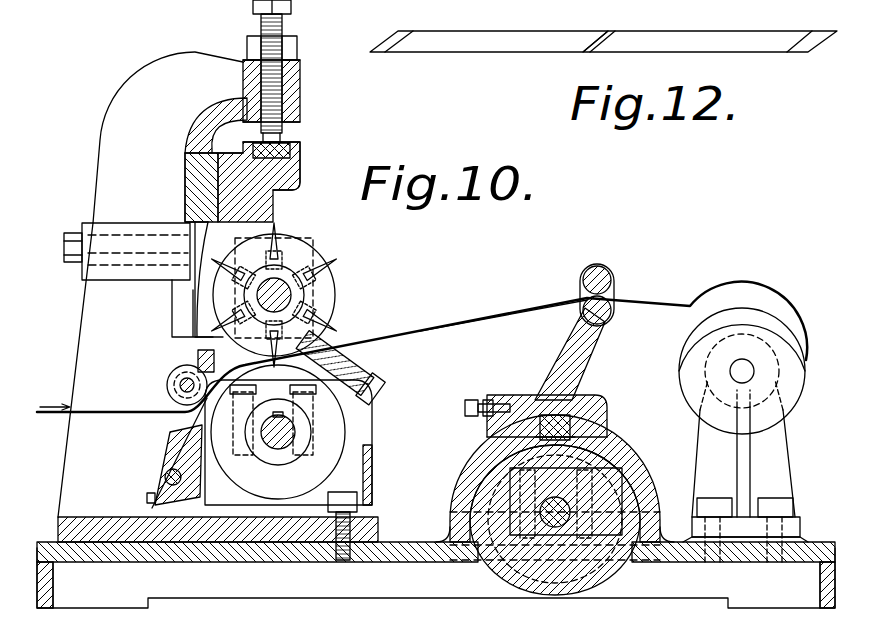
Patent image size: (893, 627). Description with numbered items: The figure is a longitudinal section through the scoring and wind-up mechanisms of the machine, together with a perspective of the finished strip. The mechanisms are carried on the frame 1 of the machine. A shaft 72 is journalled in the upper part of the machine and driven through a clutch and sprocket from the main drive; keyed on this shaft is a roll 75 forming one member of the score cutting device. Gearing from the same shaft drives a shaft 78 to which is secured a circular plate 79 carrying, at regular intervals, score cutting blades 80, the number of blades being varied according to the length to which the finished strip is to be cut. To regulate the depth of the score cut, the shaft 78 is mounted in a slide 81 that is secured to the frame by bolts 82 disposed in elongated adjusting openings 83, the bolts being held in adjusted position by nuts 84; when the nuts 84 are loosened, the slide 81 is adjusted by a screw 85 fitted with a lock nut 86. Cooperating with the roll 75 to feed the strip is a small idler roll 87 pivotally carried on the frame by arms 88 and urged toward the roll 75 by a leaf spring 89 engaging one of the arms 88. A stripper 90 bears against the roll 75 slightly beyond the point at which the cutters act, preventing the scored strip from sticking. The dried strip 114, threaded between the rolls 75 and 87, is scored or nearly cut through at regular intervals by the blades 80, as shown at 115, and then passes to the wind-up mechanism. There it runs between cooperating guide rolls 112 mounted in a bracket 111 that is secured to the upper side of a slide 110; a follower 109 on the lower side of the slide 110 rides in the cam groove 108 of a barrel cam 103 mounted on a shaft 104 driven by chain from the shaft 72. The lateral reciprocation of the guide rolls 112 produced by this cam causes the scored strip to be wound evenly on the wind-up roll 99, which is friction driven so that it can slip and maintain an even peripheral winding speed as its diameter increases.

In FIG. 10, the frame 1 is at (238, 600).
In FIG. 10, the shaft 72 is at (280, 448).
In FIG. 10, the roll 75 is at (333, 462).
In FIG. 10, the shaft 78 is at (292, 296).
In FIG. 10, the circular plate 79 is at (303, 242).
In FIG. 10, the score cutting blades 80 is at (322, 322).
In FIG. 10, the slide 81 is at (300, 176).
In FIG. 10, the bolts 82 is at (123, 240).
In FIG. 10, the elongated adjusting openings 83 is at (135, 266).
In FIG. 10, the nuts 84 is at (66, 232).
In FIG. 10, the screw 85 is at (283, 30).
In FIG. 10, the lock nut 86 is at (297, 48).
In FIG. 10, the idler roll 87 is at (170, 378).
In FIG. 10, the arms 88 is at (165, 422).
In FIG. 10, the leaf spring 89 is at (162, 452).
In FIG. 10, the stripper 90 is at (343, 370).
In FIG. 10, the wind-up roll 99 is at (790, 334).
In FIG. 10, the barrel cam 103 is at (500, 568).
In FIG. 10, the shaft 104 is at (556, 527).
In FIG. 10, the cam groove 108 is at (598, 440).
In FIG. 10, the follower 109 is at (498, 442).
In FIG. 10, the slide 110 is at (578, 398).
In FIG. 10, the bracket 111 is at (570, 348).
In FIG. 10, the guide rolls 112 is at (607, 292).
In FIG. 10, the dried strip 114 is at (460, 328).
In FIG. 12, the dried strip 114 is at (724, 36).
In FIG. 10, the score cuts 115 is at (555, 305).
In FIG. 12, the score cuts 115 is at (622, 36).